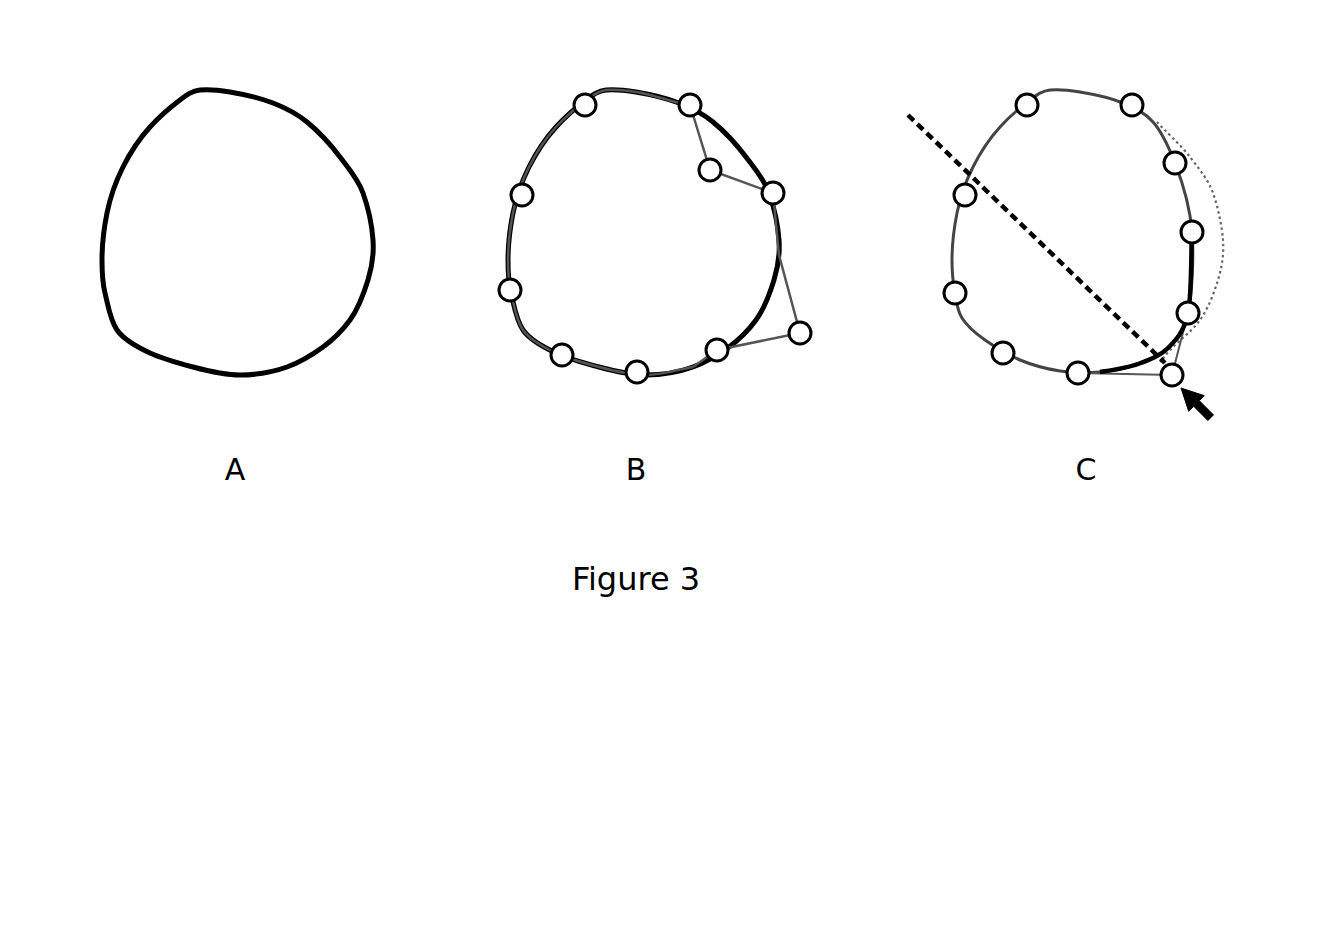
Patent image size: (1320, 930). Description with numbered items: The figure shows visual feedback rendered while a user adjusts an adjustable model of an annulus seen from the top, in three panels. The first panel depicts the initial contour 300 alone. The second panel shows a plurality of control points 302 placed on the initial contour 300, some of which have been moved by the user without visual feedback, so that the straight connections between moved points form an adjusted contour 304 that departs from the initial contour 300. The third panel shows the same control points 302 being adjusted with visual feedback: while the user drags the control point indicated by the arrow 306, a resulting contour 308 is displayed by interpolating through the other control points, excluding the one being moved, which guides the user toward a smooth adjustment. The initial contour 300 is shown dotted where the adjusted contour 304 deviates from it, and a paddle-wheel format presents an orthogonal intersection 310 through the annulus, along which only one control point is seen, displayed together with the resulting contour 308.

The initial contour 300 is at (150, 128).
The control points 302 is at (585, 100).
The adjusted contour 304 is at (785, 280).
The arrow 306 is at (1185, 383).
The resulting contour 308 is at (1175, 342).
The orthogonal intersection 310 is at (927, 127).